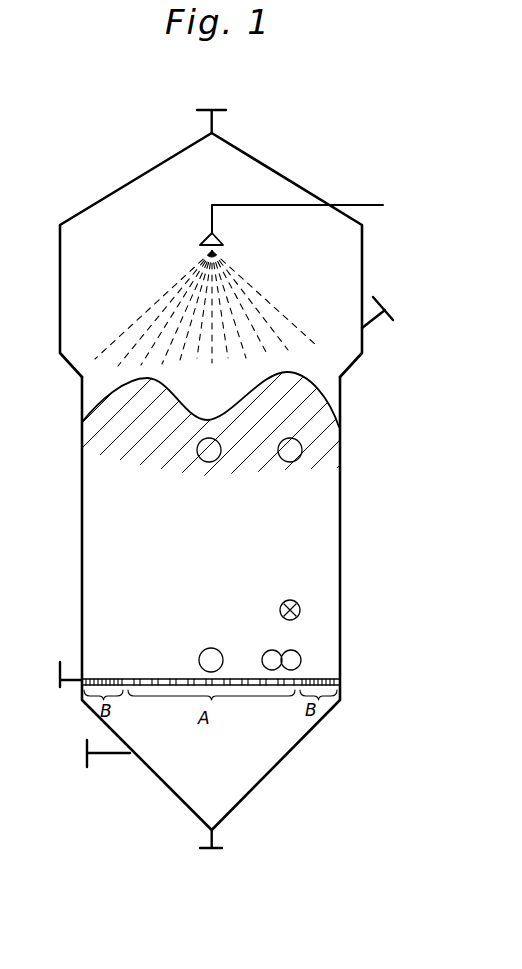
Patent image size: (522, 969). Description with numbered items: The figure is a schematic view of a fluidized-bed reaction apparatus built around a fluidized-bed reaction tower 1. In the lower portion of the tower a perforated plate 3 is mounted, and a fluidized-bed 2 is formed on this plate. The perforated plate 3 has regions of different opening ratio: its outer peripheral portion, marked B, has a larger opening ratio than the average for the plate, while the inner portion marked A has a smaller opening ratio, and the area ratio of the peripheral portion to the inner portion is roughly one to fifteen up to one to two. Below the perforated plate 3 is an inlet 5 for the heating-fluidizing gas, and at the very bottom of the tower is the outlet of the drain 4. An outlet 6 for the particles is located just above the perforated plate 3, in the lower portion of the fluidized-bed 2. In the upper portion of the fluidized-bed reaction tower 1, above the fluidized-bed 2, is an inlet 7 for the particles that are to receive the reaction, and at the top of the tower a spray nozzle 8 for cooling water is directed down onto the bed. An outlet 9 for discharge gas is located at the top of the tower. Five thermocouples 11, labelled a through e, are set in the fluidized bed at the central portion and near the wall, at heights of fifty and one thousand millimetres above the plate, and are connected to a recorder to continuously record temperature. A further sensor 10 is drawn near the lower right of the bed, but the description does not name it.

The fluidized-bed reaction tower 1 is at (81, 445).
The fluidized-bed 2 is at (97, 518).
The perforated plate 3 is at (133, 679).
The drain 4 is at (202, 845).
The inlet of the heating-fluidizing gas 5 is at (84, 768).
The outlet of the particle 6 is at (58, 678).
The inlet of the particle 7 is at (388, 313).
The spray nozzle of the cooling water 8 is at (224, 239).
The outlet of discharge gas 9 is at (214, 119).
The sensor 10 is at (301, 608).
The thermocouples 11 is at (220, 442).